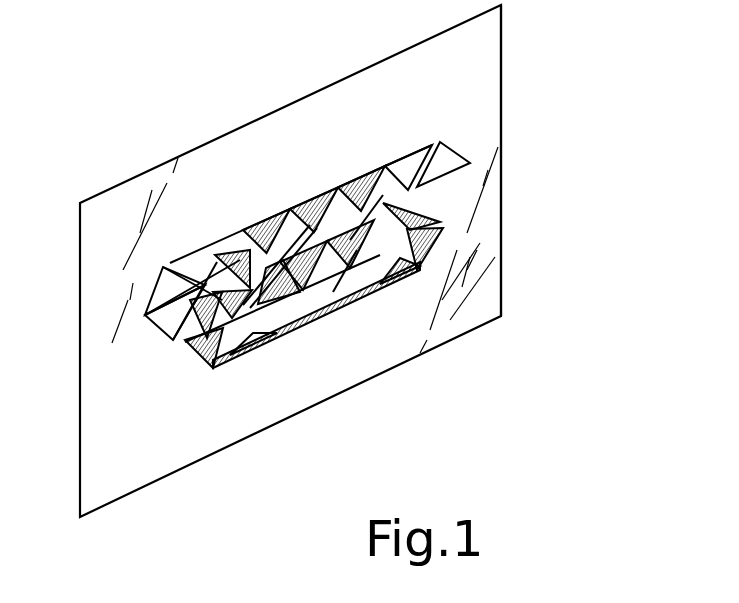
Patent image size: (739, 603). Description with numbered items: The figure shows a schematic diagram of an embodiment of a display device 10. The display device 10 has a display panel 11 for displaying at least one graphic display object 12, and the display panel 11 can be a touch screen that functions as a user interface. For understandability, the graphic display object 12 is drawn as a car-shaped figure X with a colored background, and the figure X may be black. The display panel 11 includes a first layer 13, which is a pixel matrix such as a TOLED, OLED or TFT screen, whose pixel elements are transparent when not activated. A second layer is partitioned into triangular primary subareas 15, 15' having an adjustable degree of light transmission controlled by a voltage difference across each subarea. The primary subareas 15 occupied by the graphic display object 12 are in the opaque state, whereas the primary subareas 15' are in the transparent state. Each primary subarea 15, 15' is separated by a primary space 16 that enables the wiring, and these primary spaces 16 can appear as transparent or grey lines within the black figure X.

The display device 10 is at (526, 92).
The display panel 11 is at (487, 52).
The graphic display object 12 is at (397, 249).
The first layer 13 is at (497, 267).
The primary subareas 15 is at (301, 206).
The primary subareas 15' is at (303, 213).
The primary space 16 is at (160, 280).
The figure X is at (326, 303).